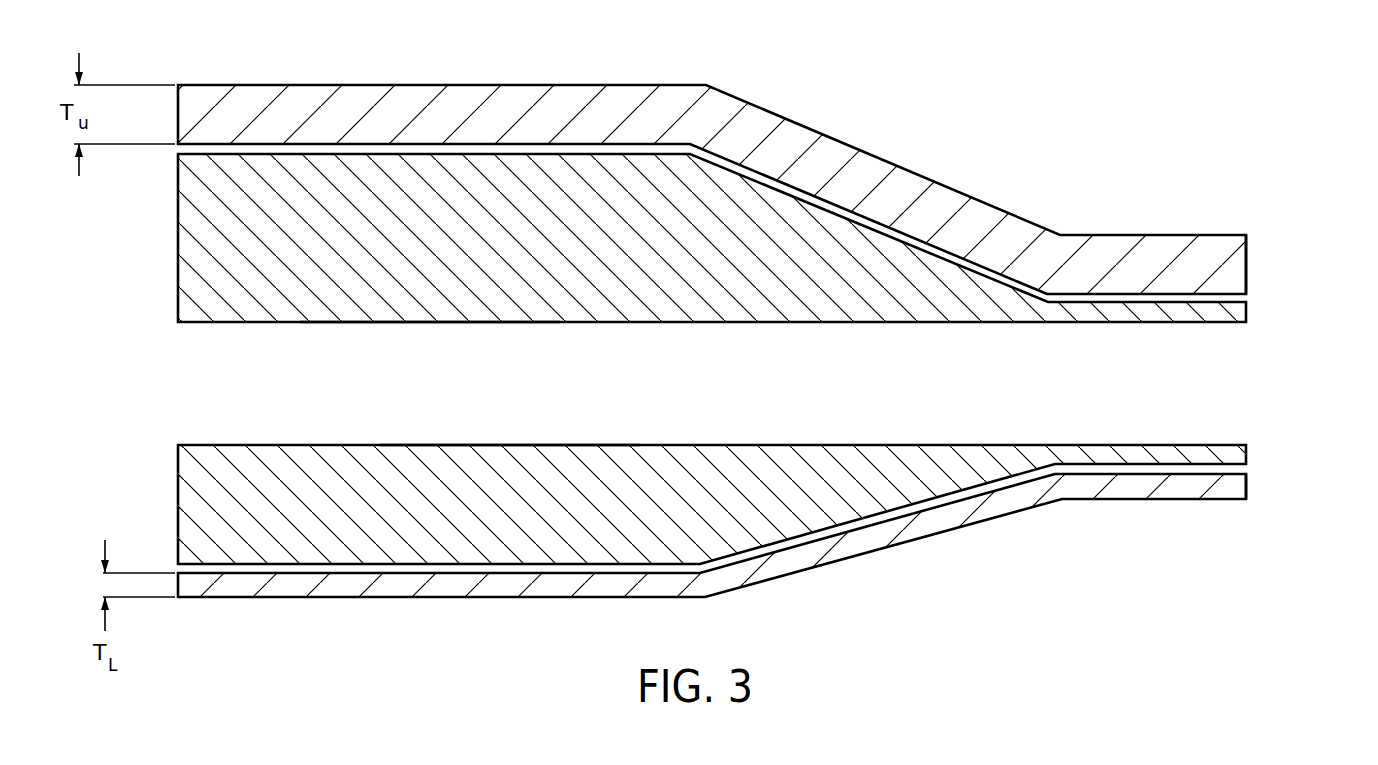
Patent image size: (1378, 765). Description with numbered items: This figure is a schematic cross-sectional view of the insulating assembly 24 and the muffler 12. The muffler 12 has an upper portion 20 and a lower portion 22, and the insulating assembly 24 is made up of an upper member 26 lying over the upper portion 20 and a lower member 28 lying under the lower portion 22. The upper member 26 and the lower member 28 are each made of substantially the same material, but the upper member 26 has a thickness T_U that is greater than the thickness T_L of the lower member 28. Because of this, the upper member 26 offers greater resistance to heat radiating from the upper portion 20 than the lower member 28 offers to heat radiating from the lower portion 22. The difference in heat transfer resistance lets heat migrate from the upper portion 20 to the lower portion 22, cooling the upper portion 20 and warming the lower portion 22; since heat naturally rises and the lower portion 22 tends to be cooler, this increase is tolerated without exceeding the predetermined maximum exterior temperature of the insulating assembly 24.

The muffler 12 is at (178, 240).
The upper portion 20 is at (430, 323).
The lower portion 22 is at (495, 445).
The insulating assembly 24 is at (1254, 265).
The upper member 26 is at (645, 85).
The lower member 28 is at (535, 598).